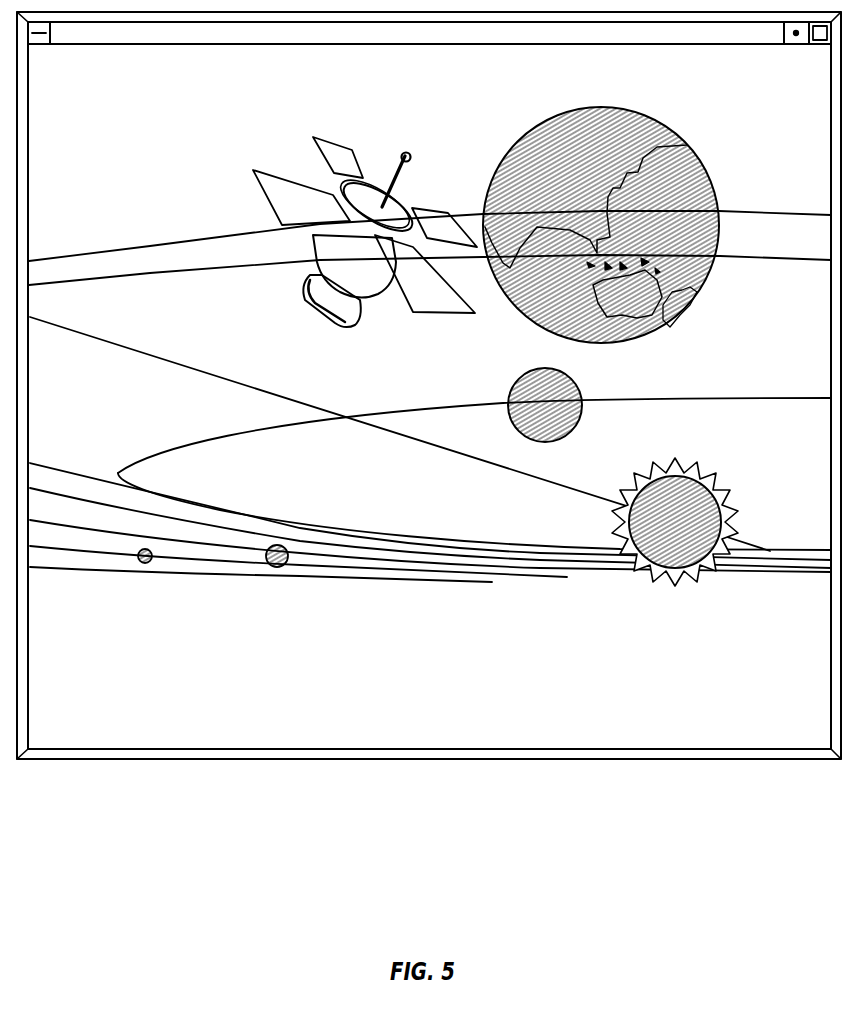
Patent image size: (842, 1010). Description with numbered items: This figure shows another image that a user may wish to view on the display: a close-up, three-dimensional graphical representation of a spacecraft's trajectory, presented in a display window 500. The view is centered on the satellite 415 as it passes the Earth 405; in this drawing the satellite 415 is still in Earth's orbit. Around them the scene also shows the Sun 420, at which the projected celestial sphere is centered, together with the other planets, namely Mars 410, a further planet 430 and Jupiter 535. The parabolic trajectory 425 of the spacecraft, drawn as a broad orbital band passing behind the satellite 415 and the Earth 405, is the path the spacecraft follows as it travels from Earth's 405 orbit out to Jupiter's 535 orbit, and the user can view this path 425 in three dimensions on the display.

The display window of three-dimensional view 500 is at (812, 740).
The Earth 405 is at (605, 210).
The satellite 415 is at (363, 218).
The trajectory 425 is at (430, 248).
The planet 430 is at (574, 401).
The Sun 420 is at (700, 510).
The planet 410 is at (305, 522).
The Jupiter 535 is at (136, 582).